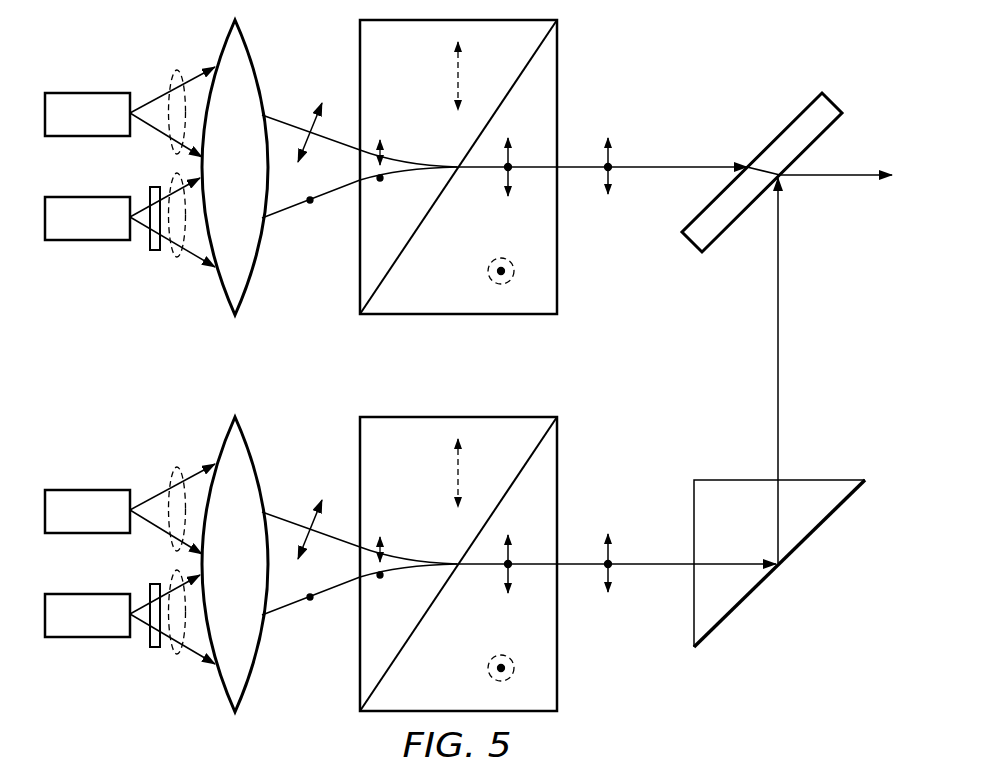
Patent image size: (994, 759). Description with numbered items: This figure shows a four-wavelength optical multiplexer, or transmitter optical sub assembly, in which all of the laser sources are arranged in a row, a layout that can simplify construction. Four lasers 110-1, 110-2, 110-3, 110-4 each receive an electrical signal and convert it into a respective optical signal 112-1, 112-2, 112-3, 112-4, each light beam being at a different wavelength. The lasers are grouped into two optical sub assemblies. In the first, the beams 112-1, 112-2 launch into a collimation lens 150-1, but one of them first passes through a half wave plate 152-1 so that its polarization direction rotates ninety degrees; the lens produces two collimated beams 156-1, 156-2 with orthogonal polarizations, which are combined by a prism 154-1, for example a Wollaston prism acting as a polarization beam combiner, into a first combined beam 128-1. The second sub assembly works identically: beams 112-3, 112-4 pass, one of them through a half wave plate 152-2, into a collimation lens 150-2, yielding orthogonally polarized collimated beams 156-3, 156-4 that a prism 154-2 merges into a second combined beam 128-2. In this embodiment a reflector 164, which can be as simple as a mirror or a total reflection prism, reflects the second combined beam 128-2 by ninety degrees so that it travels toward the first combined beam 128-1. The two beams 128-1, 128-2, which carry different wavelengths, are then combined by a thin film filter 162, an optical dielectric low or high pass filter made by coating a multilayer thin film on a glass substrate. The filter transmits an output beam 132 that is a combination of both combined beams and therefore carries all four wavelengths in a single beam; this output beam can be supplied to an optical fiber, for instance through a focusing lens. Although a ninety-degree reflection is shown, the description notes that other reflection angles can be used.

The laser 110-1 is at (88, 93).
The laser 110-2 is at (77, 240).
The laser 110-3 is at (88, 490).
The laser 110-4 is at (77, 637).
The optical signal 112-1 is at (176, 71).
The optical signal 112-2 is at (177, 174).
The optical signal 112-3 is at (176, 468).
The optical signal 112-4 is at (177, 571).
The half wave plate 152-1 is at (155, 251).
The half wave plate 152-2 is at (155, 648).
The collimation lens 150-1 is at (245, 46).
The collimation lens 150-2 is at (245, 443).
The collimated beam 156-1 is at (290, 122).
The collimated beam 156-2 is at (287, 209).
The collimated beam 156-3 is at (290, 519).
The collimated beam 156-4 is at (287, 606).
The prism 154-1 is at (558, 82).
The prism 154-2 is at (558, 480).
The first combined beam 128-1 is at (657, 166).
The second combined beam 128-2 is at (641, 562).
The thin film filter 162 is at (768, 143).
The reflector 164 is at (805, 480).
The output beam 132 is at (848, 174).